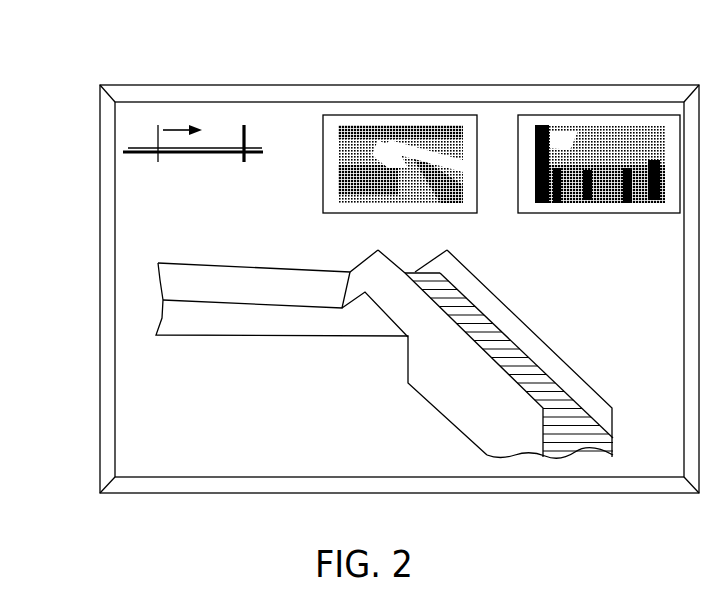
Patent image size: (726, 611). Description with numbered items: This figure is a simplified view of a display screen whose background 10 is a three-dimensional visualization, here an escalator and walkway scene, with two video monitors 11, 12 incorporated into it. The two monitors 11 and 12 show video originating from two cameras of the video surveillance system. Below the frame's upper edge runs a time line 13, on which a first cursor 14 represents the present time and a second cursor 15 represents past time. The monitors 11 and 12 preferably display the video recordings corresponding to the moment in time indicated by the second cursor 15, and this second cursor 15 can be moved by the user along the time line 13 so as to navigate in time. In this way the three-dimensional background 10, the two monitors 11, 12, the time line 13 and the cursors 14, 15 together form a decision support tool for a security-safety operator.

The background 10 is at (202, 387).
The monitor 11 is at (605, 128).
The monitor 12 is at (380, 118).
The time line 13 is at (130, 148).
The first cursor 14 is at (244, 125).
The second cursor 15 is at (158, 128).